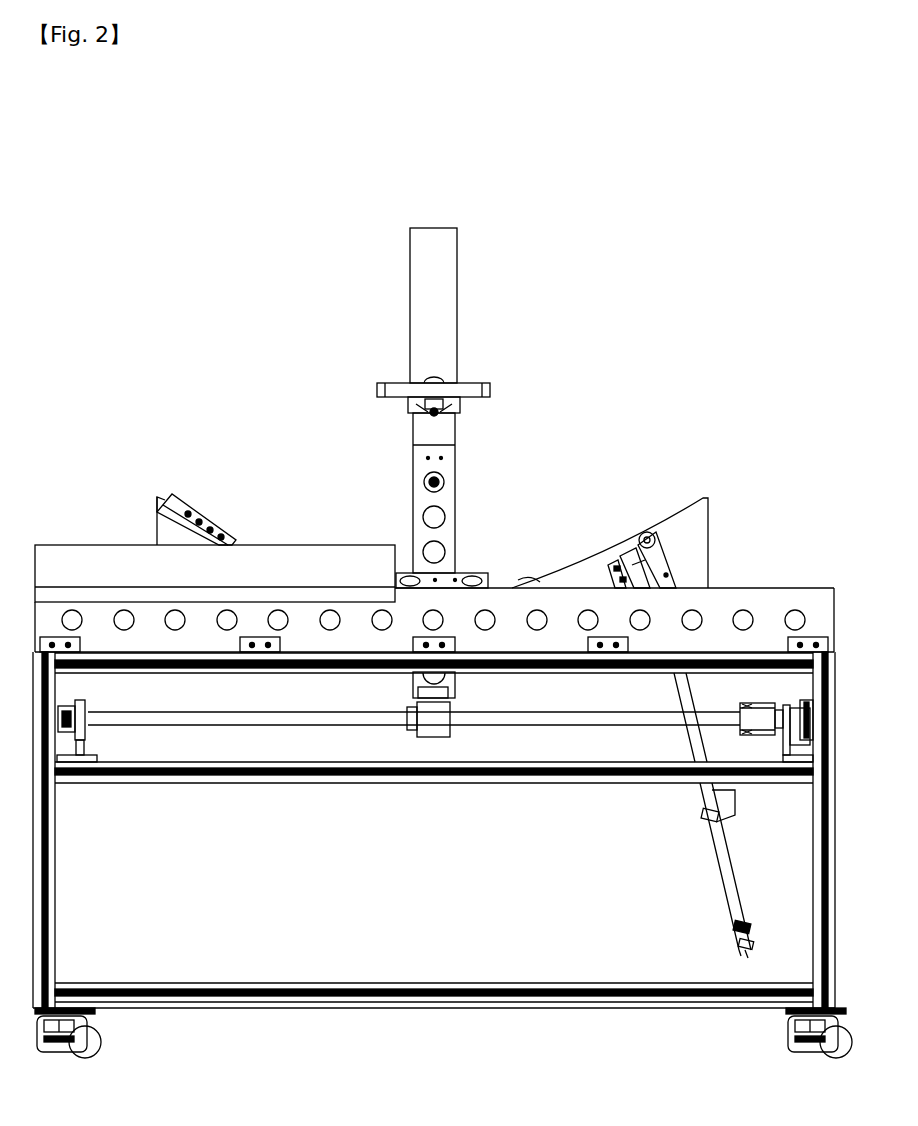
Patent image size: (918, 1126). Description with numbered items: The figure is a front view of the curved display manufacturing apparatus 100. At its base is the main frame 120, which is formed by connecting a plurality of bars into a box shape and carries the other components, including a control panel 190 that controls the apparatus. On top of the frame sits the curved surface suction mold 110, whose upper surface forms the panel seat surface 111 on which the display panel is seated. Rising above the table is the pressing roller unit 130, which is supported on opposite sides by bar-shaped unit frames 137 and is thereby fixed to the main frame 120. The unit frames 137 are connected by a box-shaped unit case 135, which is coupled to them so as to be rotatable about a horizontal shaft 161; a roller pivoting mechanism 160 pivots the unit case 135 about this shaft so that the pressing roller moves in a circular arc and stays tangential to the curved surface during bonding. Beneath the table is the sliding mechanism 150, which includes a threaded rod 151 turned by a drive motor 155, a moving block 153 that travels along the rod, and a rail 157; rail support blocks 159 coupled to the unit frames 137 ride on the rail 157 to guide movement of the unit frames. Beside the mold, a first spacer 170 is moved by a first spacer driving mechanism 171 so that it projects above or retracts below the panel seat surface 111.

The curved display manufacturing apparatus 100 is at (186, 186).
The curved surface suction mold 110 is at (698, 542).
The panel seat surface 111 is at (568, 570).
The main frame 120 is at (187, 782).
The pressing roller unit 130 is at (378, 372).
The unit case 135 is at (443, 308).
The unit frame 137 is at (413, 498).
The sliding mechanism 150 is at (484, 740).
The threaded rod 151 is at (345, 727).
The moving block 153 is at (432, 738).
The drive motor 155 is at (762, 700).
The rail 157 is at (498, 587).
The rail support block 159 is at (468, 572).
The roller pivoting mechanism 160 is at (402, 420).
The horizontal shaft 161 is at (462, 407).
The first spacer 170 is at (643, 532).
The first spacer driving mechanism 171 is at (722, 890).
The control panel 190 is at (113, 558).